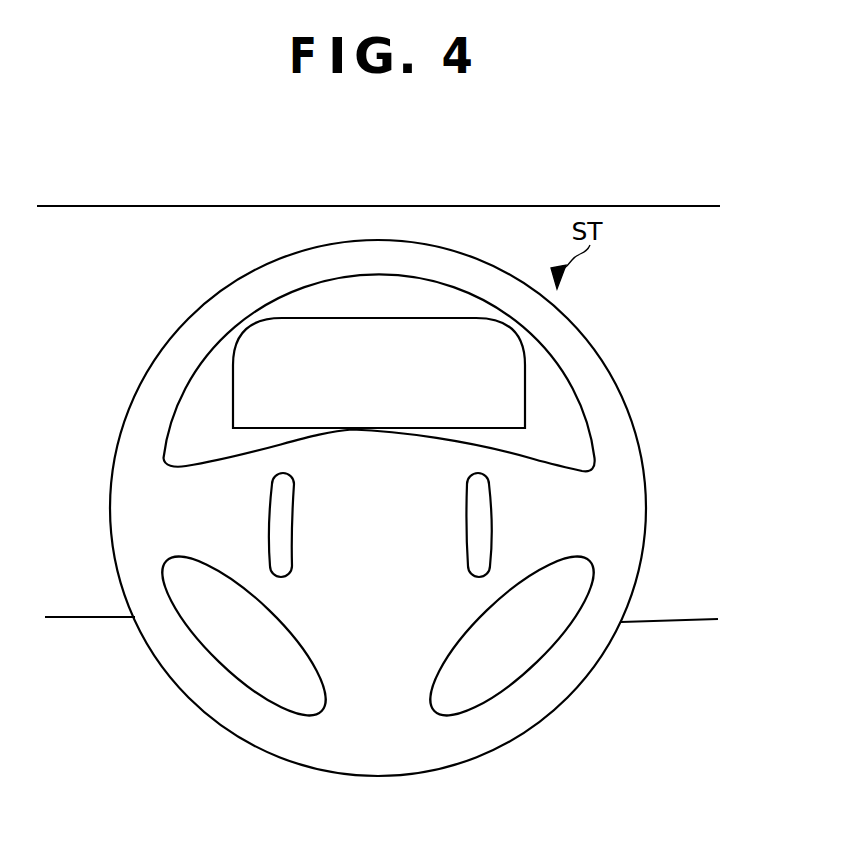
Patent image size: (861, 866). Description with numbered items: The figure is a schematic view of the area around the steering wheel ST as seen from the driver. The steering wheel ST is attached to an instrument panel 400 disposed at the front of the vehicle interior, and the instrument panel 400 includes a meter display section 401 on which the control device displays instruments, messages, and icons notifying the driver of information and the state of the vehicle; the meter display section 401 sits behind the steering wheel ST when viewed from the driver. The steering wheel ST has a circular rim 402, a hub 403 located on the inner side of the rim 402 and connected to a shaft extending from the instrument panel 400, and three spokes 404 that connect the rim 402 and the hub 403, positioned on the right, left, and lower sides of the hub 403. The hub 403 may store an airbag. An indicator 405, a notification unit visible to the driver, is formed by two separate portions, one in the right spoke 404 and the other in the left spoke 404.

The instrument panel 400 is at (668, 235).
The meter display section 401 is at (379, 368).
The rim 402 is at (283, 273).
The hub 403 is at (378, 537).
The spoke 404 is at (218, 537).
The indicator 405 is at (280, 537).